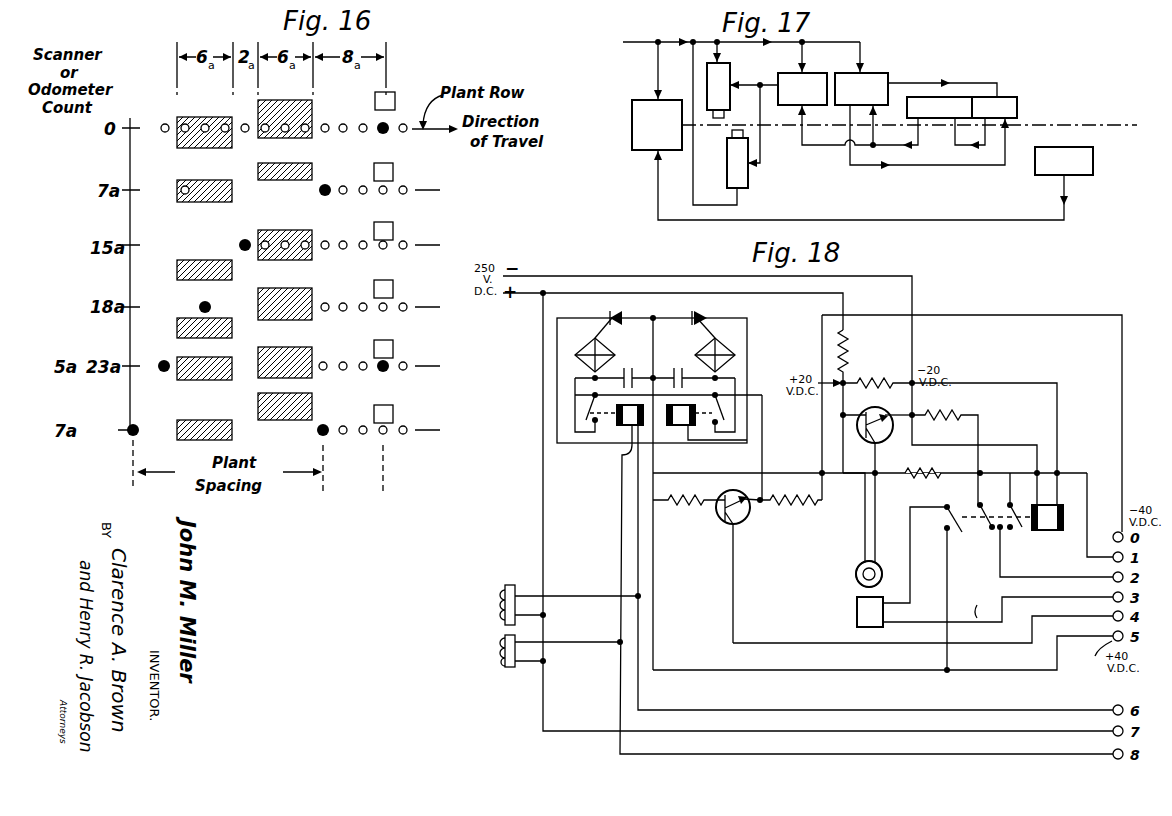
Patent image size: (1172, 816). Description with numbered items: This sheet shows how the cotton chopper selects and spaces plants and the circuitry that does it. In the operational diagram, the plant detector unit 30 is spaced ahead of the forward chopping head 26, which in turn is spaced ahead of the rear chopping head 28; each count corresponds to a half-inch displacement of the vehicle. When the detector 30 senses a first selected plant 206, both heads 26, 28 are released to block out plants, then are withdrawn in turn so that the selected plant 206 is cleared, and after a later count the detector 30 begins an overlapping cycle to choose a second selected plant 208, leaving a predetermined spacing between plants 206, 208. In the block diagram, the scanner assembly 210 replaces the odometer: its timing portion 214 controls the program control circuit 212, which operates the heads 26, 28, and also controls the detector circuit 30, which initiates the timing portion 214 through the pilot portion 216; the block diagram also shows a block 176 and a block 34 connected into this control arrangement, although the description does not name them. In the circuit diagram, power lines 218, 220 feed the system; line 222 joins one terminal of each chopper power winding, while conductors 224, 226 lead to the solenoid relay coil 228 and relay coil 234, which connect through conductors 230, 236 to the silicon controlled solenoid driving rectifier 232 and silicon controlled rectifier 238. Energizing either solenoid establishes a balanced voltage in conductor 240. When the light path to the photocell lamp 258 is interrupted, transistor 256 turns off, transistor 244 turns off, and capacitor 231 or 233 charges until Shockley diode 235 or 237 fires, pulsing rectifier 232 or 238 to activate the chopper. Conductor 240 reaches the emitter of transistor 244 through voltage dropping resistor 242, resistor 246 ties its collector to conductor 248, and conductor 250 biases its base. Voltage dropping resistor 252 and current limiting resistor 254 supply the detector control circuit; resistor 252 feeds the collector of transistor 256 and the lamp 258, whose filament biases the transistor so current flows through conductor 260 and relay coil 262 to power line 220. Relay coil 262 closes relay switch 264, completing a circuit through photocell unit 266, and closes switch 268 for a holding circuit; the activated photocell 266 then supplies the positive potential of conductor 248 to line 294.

In FIG. 16, the forward chopping head 26 is at (310, 120).
In FIG. 17, the forward chopping head 26 is at (748, 175).
In FIG. 18, the forward chopping head 26 is at (500, 584).
In FIG. 16, the rear chopping head 28 is at (196, 118).
In FIG. 18, the rear chopping head 28 is at (500, 670).
In FIG. 16, the plant detector unit 30 is at (398, 100).
In FIG. 17, the plant detector unit 30 is at (861, 89).
In FIG. 18, the plant detector unit 30 is at (838, 590).
In FIG. 17, the control unit 34 is at (1064, 161).
In FIG. 17, the odometer counter 176 is at (657, 125).
In FIG. 16, the first selected plant 206 is at (243, 243).
In FIG. 16, the second selected plant 208 is at (323, 193).
In FIG. 17, the scanner assembly 210 is at (1010, 83).
In FIG. 17, the program control circuit 212 is at (802, 89).
In FIG. 17, the timing portion 214 is at (939, 107).
In FIG. 17, the pilot portion 216 is at (994, 107).
In FIG. 18, the power line 218 is at (615, 293).
In FIG. 18, the power line 220 is at (578, 276).
In FIG. 18, the line 222 is at (590, 732).
In FIG. 18, the conductor 224 is at (641, 622).
In FIG. 18, the conductor 226 is at (620, 694).
In FIG. 18, the solenoid relay coil 228 is at (623, 450).
In FIG. 18, the conductor 230 is at (557, 362).
In FIG. 18, the capacitor 231 is at (627, 366).
In FIG. 18, the silicon controlled solenoid driving rectifier 232 is at (616, 311).
In FIG. 18, the capacitor 233 is at (683, 358).
In FIG. 18, the relay coil 234 is at (678, 425).
In FIG. 18, the Shockley diode 235 is at (580, 350).
In FIG. 18, the conductor 236 is at (747, 362).
In FIG. 18, the Shockley diode 237 is at (728, 352).
In FIG. 18, the silicon controlled rectifier 238 is at (700, 311).
In FIG. 18, the conductor 240 is at (1032, 315).
In FIG. 18, the voltage dropping resistor 242 is at (791, 517).
In FIG. 18, the transistor 244 is at (740, 524).
In FIG. 18, the resistor 246 is at (684, 517).
In FIG. 18, the conductor 248 is at (665, 670).
In FIG. 18, the conductor 250 is at (820, 643).
In FIG. 18, the voltage dropping resistor 252 is at (846, 335).
In FIG. 18, the current limiting resistor 254 is at (868, 377).
In FIG. 18, the transistor 256 is at (883, 416).
In FIG. 18, the photocell lamp 258 is at (858, 569).
In FIG. 18, the conductor 260 is at (1004, 443).
In FIG. 18, the relay coil 262 is at (1050, 532).
In FIG. 18, the relay switch 264 is at (953, 532).
In FIG. 18, the photocell unit 266 is at (850, 611).
In FIG. 18, the switch 268 is at (1014, 533).
In FIG. 18, the line 294 is at (998, 606).